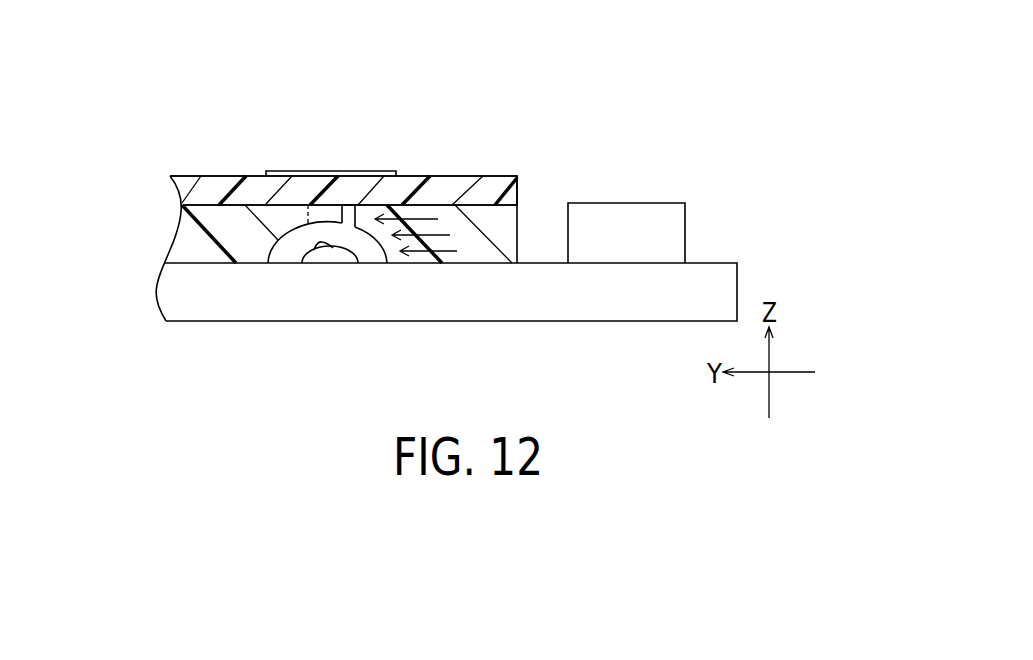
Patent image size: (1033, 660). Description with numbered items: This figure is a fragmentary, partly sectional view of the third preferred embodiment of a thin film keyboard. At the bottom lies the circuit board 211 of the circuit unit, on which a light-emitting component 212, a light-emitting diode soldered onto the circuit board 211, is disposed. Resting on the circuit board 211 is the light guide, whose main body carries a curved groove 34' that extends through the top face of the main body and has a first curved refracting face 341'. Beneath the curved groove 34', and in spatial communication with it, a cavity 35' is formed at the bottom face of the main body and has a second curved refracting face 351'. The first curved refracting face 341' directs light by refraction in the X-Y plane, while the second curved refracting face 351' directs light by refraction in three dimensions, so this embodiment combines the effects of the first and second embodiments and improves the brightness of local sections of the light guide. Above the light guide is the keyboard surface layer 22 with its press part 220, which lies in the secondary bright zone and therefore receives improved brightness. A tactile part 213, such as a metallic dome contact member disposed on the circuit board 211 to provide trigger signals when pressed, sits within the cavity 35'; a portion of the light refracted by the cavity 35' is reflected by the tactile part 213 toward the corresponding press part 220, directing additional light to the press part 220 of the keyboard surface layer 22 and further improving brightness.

The keyboard surface layer 22 is at (505, 185).
The press part 220 is at (295, 171).
The curved groove 34' is at (335, 170).
The first curved refracting face 341' is at (398, 179).
The cavity 35' is at (312, 295).
The second curved refracting face 351' is at (360, 307).
The tactile part 213 is at (314, 250).
The circuit board 211 is at (608, 290).
The light-emitting component 212 is at (660, 237).